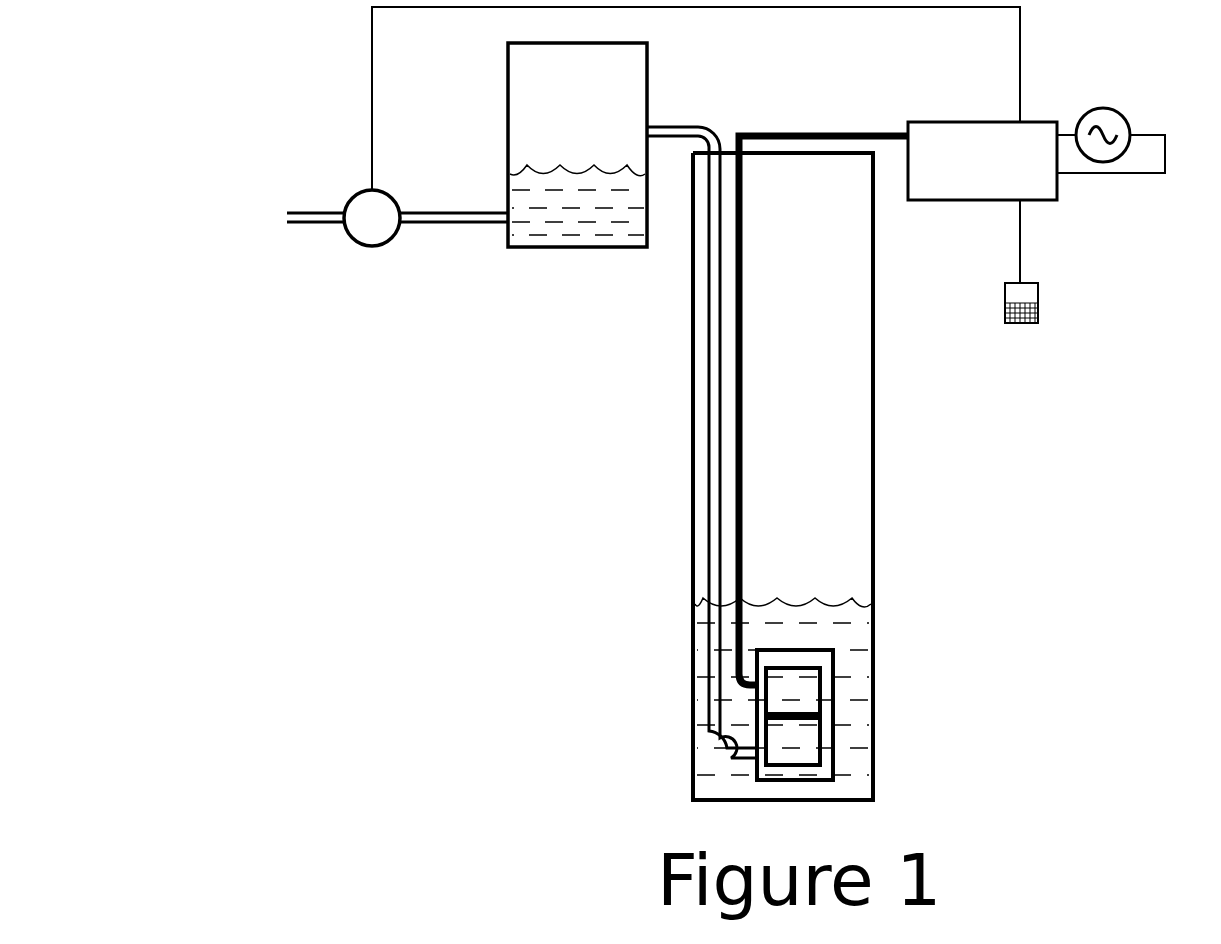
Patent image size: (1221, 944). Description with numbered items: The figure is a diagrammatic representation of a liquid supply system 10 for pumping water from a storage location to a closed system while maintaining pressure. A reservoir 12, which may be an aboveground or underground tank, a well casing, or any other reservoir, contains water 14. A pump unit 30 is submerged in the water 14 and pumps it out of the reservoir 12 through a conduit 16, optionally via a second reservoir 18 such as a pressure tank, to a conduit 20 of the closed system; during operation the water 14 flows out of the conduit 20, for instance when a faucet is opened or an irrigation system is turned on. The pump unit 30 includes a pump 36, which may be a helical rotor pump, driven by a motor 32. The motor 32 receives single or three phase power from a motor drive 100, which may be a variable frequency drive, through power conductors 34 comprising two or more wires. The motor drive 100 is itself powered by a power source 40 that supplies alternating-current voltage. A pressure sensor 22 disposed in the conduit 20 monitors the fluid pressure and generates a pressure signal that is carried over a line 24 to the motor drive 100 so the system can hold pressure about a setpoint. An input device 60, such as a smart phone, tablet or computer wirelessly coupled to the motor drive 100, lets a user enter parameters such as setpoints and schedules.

The liquid supply system 10 is at (266, 110).
The reservoir 12 is at (691, 540).
The water 14 is at (832, 606).
The conduit 16 is at (708, 452).
The reservoir 18 is at (595, 248).
The conduit 20 is at (300, 225).
The pressure sensor 22 is at (372, 248).
The line 24 is at (372, 64).
The pump unit 30 is at (842, 714).
The motor 32 is at (820, 676).
The power conductors 34 is at (743, 505).
The pump 36 is at (820, 748).
The power source 40 is at (1121, 115).
The input device 60 is at (1022, 325).
The motor drive 100 is at (1005, 202).